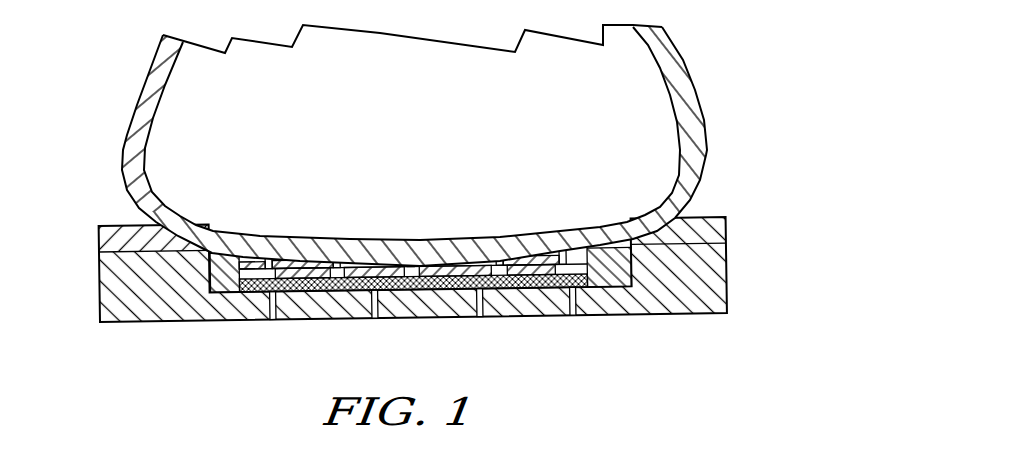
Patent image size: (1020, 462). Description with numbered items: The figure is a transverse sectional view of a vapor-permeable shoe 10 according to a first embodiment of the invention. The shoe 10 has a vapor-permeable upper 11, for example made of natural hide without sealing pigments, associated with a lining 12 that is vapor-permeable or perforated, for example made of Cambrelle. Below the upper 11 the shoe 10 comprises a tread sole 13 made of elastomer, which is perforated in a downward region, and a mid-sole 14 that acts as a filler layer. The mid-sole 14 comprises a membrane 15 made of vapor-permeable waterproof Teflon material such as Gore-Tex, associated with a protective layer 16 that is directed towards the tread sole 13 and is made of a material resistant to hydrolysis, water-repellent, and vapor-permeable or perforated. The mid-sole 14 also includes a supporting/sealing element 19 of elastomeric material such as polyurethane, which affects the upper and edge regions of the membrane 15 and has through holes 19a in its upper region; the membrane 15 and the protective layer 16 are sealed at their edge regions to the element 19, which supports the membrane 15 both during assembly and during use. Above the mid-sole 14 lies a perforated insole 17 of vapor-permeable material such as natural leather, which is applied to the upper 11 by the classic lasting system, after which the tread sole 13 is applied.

The vapor-permeable shoe 10 is at (431, 201).
The upper 11 is at (388, 136).
The lining 12 is at (167, 97).
The tread sole 13 is at (655, 318).
The mid-sole 14 is at (217, 270).
The membrane 15 is at (434, 295).
The protective layer 16 is at (329, 297).
The insole 17 is at (532, 240).
The supporting/sealing element 19 is at (347, 268).
The through holes 19a is at (275, 264).